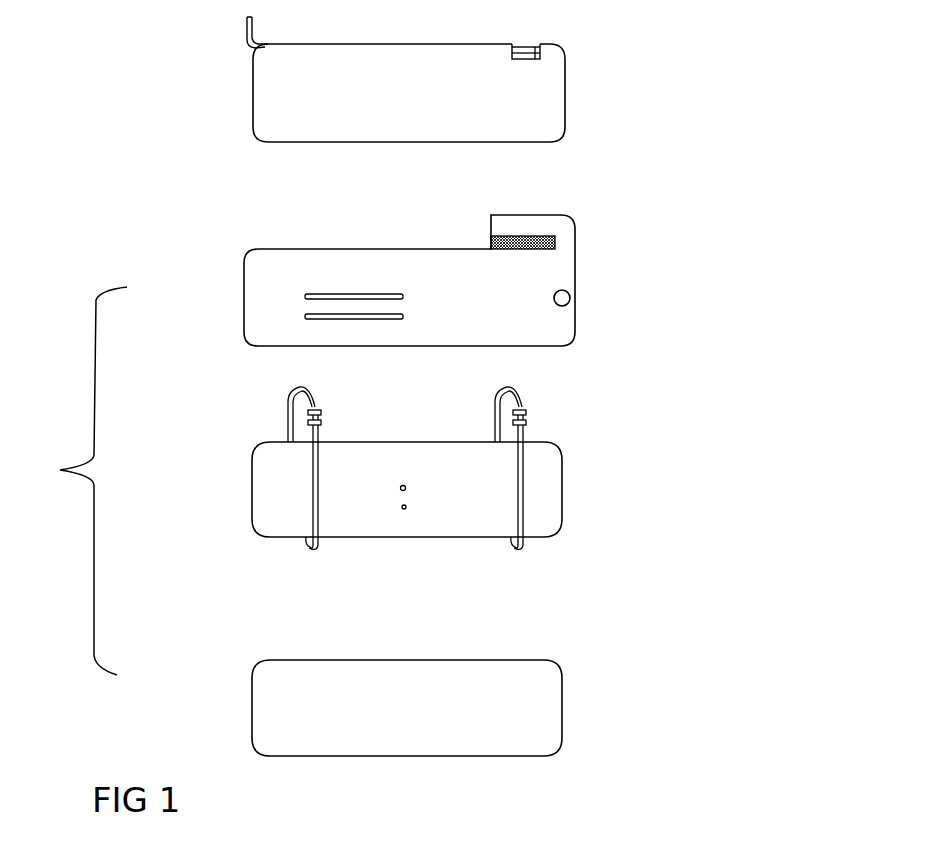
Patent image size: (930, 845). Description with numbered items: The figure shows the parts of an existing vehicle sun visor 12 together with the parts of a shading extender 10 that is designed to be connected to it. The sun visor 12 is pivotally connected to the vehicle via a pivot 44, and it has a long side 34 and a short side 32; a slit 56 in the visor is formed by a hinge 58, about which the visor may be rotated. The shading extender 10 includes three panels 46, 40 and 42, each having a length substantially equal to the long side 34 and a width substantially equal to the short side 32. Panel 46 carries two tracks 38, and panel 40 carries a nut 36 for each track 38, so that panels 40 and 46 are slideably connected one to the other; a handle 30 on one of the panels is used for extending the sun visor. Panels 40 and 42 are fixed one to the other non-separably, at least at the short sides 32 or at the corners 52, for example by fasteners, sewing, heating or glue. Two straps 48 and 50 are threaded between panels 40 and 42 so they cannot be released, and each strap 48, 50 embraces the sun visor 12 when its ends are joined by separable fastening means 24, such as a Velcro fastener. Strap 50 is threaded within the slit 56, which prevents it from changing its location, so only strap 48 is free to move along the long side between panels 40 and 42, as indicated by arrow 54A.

The shading extender 10 is at (77, 481).
The existing vehicle sun visor 12 is at (402, 77).
The separable fastening means 24 is at (322, 417).
The handle 30 is at (567, 299).
The short side 32 is at (232, 48).
The long side 34 is at (258, 154).
The nut 36 is at (404, 485).
The track 38 is at (358, 294).
The panel 40 is at (270, 497).
The panel 42 is at (272, 726).
The pivot 44 is at (255, 20).
The panel 46 is at (260, 262).
The strap 48 is at (320, 542).
The strap 50 is at (525, 542).
The corner 52 is at (262, 449).
The arrow 54A is at (250, 557).
The slit 56 is at (537, 46).
The hinge 58 is at (519, 48).